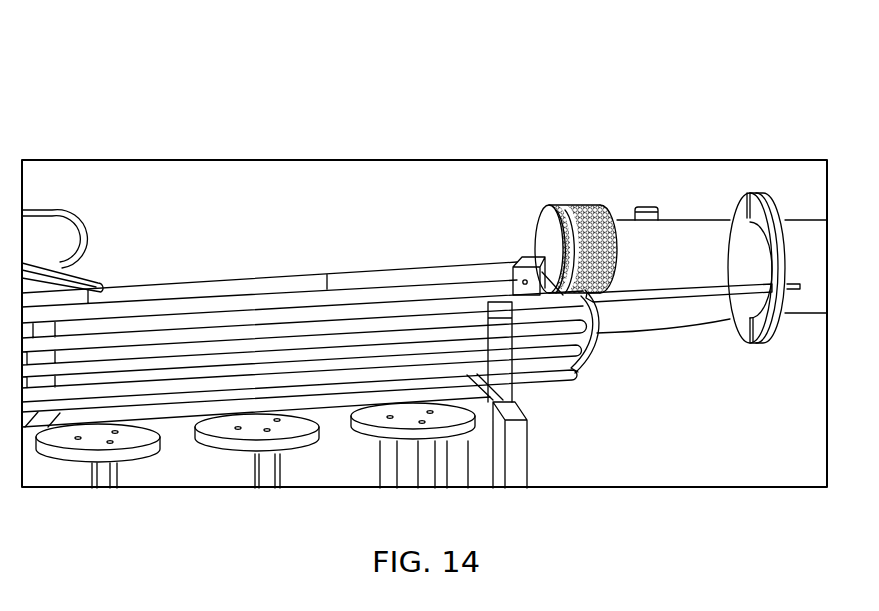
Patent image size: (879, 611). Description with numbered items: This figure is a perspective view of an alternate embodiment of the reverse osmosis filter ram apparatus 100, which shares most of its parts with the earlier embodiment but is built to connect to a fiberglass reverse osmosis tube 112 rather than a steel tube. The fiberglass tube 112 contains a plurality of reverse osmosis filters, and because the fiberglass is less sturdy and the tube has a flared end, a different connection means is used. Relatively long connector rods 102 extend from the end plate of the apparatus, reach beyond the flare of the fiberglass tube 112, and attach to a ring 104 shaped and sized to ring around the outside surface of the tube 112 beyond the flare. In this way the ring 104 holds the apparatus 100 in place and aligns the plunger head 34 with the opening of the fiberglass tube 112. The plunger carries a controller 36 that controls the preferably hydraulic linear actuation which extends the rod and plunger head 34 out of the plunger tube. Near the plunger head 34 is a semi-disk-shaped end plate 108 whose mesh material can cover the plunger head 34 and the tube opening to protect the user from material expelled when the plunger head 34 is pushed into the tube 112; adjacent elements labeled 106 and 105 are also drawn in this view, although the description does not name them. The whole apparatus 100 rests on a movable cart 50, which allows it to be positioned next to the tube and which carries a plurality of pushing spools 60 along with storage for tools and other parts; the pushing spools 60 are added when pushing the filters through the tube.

The filter ram apparatus 100 is at (437, 107).
The controller 36 is at (178, 307).
The semi-disk-shaped end plate 108 is at (543, 238).
The mesh filter ring 106 is at (583, 205).
The rod 105 is at (748, 193).
The fiberglass reverse osmosis tube 112 is at (800, 232).
The connector rods 102 is at (661, 296).
The ring 104 is at (775, 335).
The plunger head 34 is at (589, 360).
The pushing spools 60 is at (267, 467).
The cart 50 is at (517, 460).